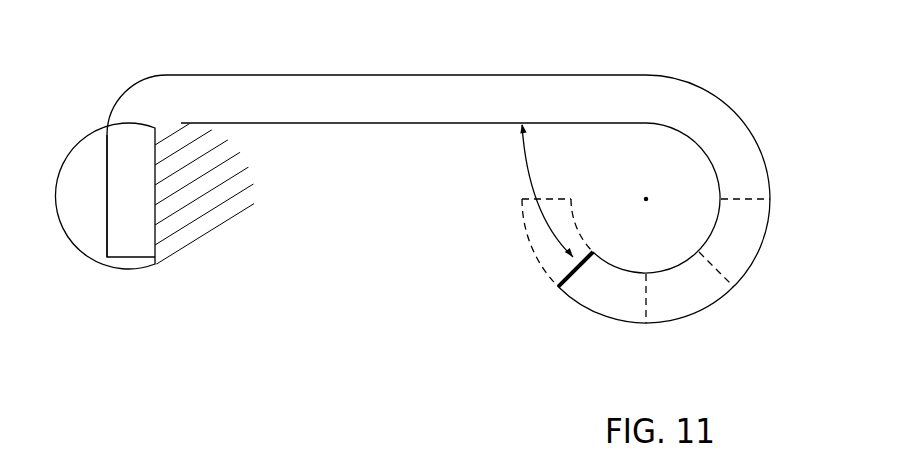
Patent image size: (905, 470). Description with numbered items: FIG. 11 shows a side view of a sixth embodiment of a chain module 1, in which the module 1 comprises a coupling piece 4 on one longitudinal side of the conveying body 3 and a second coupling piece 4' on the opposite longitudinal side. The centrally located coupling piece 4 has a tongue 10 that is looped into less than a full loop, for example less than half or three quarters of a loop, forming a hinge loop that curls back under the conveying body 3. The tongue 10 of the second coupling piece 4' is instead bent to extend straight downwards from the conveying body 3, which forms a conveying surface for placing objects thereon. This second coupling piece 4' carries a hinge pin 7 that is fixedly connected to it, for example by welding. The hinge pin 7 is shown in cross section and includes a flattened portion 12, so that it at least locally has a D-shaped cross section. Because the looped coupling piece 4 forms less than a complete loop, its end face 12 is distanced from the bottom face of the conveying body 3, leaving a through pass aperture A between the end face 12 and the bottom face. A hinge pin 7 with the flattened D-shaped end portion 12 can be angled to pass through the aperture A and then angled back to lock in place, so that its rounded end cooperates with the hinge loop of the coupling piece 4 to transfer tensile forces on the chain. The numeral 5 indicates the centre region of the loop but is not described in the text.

The module 1 is at (627, 53).
The conveying body 3 is at (414, 90).
The coupling piece 4 is at (705, 179).
The second coupling piece 4' is at (80, 196).
The receiving space / center 5 is at (250, 145).
The hinge pin 7 is at (215, 195).
The tongue 10 is at (93, 90).
The flattened portion 12 is at (145, 190).
The through pass aperture A is at (526, 168).